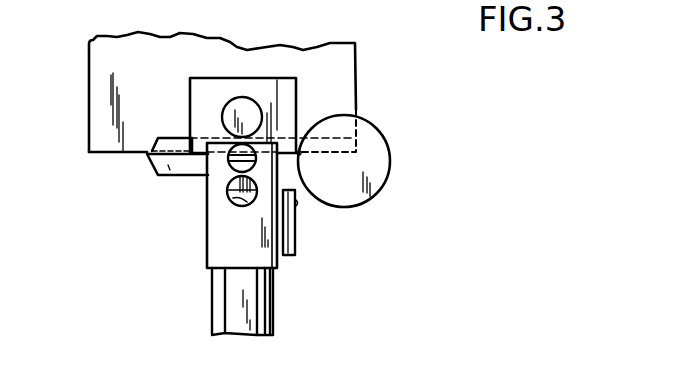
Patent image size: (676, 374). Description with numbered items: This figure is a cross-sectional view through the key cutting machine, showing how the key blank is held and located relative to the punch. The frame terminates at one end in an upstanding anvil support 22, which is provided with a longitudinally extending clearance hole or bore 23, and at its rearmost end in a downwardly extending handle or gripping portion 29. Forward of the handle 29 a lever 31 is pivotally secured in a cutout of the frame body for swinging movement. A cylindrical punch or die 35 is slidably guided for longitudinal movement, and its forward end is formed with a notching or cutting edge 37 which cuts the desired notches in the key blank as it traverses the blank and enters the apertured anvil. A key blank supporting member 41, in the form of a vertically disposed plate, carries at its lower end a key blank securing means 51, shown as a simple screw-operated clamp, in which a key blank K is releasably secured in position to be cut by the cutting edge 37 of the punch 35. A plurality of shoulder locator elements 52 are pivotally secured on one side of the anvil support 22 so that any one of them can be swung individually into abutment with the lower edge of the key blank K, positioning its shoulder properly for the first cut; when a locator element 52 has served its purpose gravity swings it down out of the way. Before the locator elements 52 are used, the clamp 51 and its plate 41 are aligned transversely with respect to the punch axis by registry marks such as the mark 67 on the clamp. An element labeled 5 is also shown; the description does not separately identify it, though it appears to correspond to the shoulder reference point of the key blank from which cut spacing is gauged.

The key blank supporting member 41 is at (103, 63).
The key blank securing means 51 is at (286, 92).
The registry mark 67 is at (240, 138).
The roller 5 is at (280, 176).
The key blank K is at (171, 170).
The cutting edge 37 is at (229, 185).
The punch 35 is at (234, 198).
The clearance hole 23 is at (247, 203).
The anvil support 22 is at (212, 250).
The lever 31 is at (235, 305).
The handle 29 is at (270, 316).
The shoulder locator elements 52 is at (296, 247).